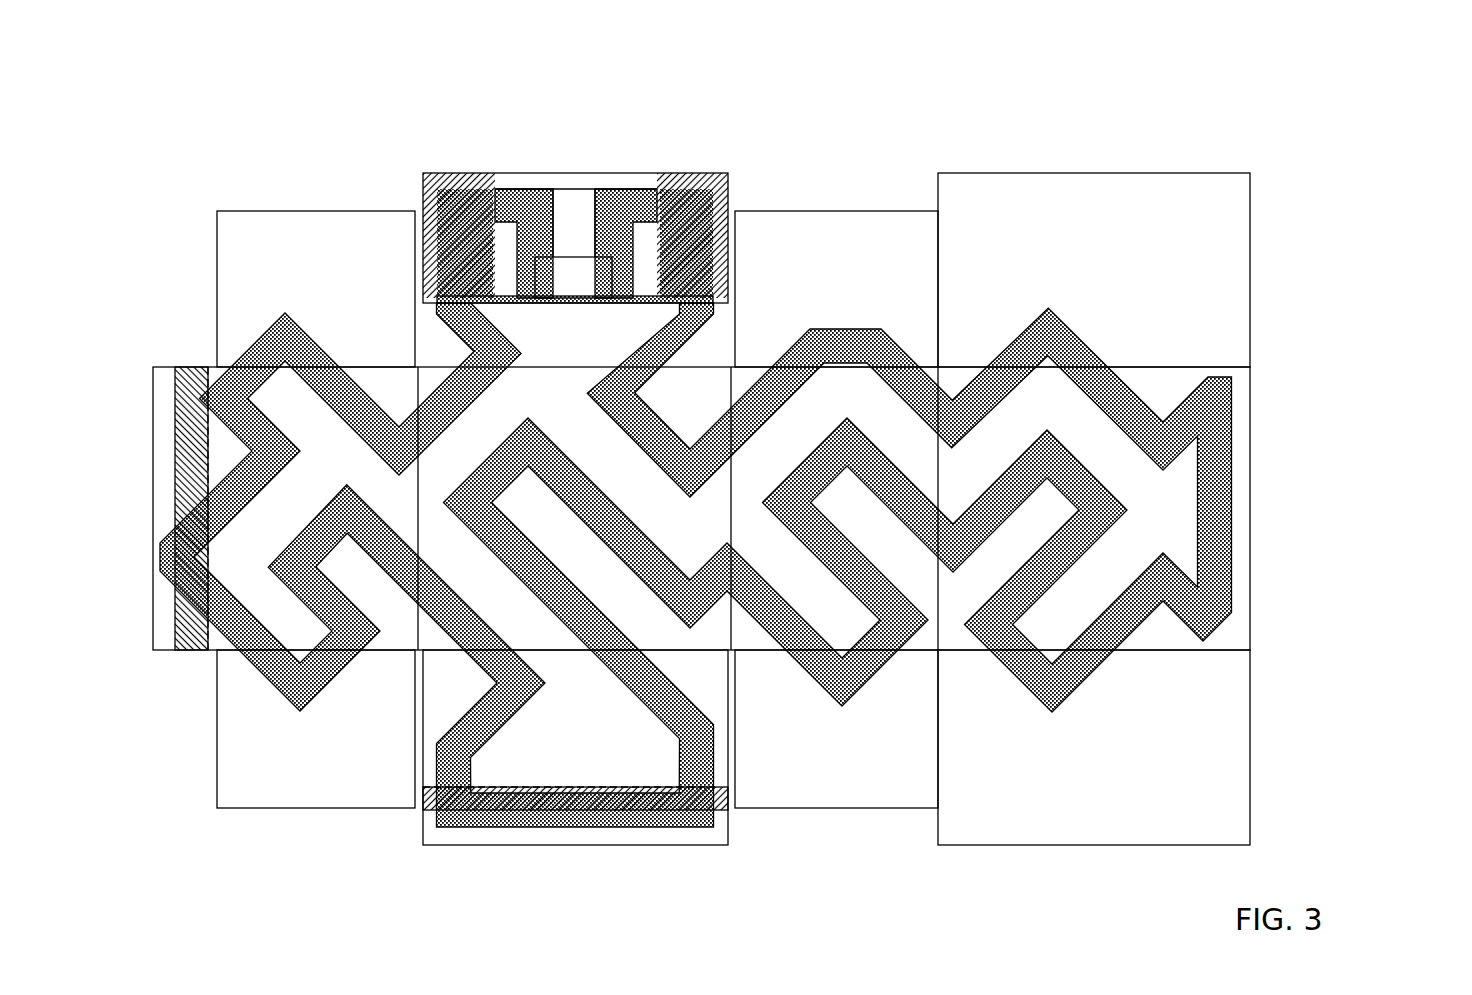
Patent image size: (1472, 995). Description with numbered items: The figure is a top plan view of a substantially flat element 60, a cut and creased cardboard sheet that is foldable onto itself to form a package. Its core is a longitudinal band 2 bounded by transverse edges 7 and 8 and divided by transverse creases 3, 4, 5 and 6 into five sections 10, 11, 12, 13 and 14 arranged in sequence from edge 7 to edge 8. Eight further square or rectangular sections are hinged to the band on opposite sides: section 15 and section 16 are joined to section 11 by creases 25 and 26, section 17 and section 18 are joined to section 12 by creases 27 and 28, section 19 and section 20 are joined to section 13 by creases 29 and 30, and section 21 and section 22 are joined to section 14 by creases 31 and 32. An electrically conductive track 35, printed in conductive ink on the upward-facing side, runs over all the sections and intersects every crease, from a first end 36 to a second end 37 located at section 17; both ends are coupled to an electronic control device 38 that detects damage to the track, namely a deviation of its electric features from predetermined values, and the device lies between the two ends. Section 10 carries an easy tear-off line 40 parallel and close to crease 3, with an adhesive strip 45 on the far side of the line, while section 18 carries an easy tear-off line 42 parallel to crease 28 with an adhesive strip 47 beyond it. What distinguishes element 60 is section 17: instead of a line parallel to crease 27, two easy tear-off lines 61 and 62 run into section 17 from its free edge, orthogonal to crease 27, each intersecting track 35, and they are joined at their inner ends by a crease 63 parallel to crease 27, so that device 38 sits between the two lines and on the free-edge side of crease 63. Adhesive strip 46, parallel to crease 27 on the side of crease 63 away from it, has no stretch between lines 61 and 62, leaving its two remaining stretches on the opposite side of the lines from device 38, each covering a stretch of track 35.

The longitudinal band 2 is at (1268, 405).
The transverse crease 3 is at (213, 562).
The transverse crease 4 is at (428, 470).
The transverse crease 5 is at (735, 513).
The transverse crease 6 is at (942, 476).
The transverse edge 7 is at (150, 502).
The transverse edge 8 is at (1259, 582).
The section 10 is at (166, 616).
The section 11 is at (396, 640).
The section 12 is at (549, 636).
The section 13 is at (750, 640).
The section 14 is at (1161, 632).
The section 15 is at (290, 238).
The section 16 is at (312, 795).
The section 17 is at (716, 360).
The section 18 is at (532, 846).
The section 19 is at (847, 238).
The section 20 is at (870, 795).
The section 21 is at (1080, 196).
The section 22 is at (1066, 826).
The crease 25 is at (386, 366).
The crease 26 is at (228, 656).
The crease 27 is at (548, 371).
The crease 28 is at (438, 652).
The crease 29 is at (756, 366).
The crease 30 is at (916, 656).
The crease 31 is at (1156, 366).
The crease 32 is at (963, 656).
The electrically conductive track 35 is at (1076, 702).
The end of track 36 is at (505, 275).
The end of track 37 is at (647, 277).
The electronic control device 38 is at (586, 292).
The easy tear-off line 40 is at (202, 398).
The easy tear-off line 42 is at (548, 787).
The adhesive strip 45 is at (205, 532).
The adhesive strip 46 is at (420, 195).
The adhesive strip 47 is at (730, 808).
The substantially flat element 60 is at (193, 184).
The easy tear-off line 61 is at (496, 179).
The easy tear-off line 62 is at (640, 178).
The crease 63 is at (558, 301).